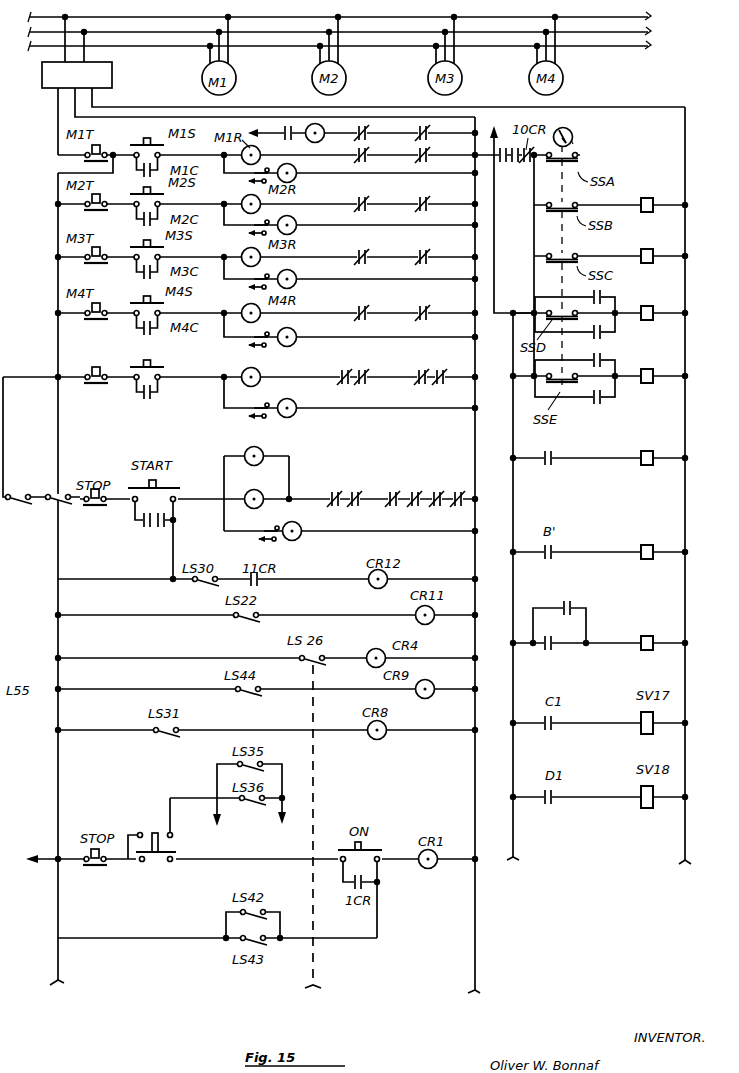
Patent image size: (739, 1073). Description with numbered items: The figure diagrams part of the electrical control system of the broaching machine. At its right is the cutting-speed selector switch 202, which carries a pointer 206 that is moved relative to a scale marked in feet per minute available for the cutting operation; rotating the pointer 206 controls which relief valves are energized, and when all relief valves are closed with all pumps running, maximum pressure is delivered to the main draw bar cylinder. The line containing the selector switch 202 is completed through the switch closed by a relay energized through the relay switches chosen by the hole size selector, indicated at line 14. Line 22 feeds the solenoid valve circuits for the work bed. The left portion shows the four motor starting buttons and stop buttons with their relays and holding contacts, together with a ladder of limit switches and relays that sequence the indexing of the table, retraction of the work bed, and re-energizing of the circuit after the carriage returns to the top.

The control line / 10CR relay contacts 14 is at (506, 155).
The control line 22 is at (587, 723).
The selector switch 202 is at (575, 134).
The pointer 206 is at (582, 136).